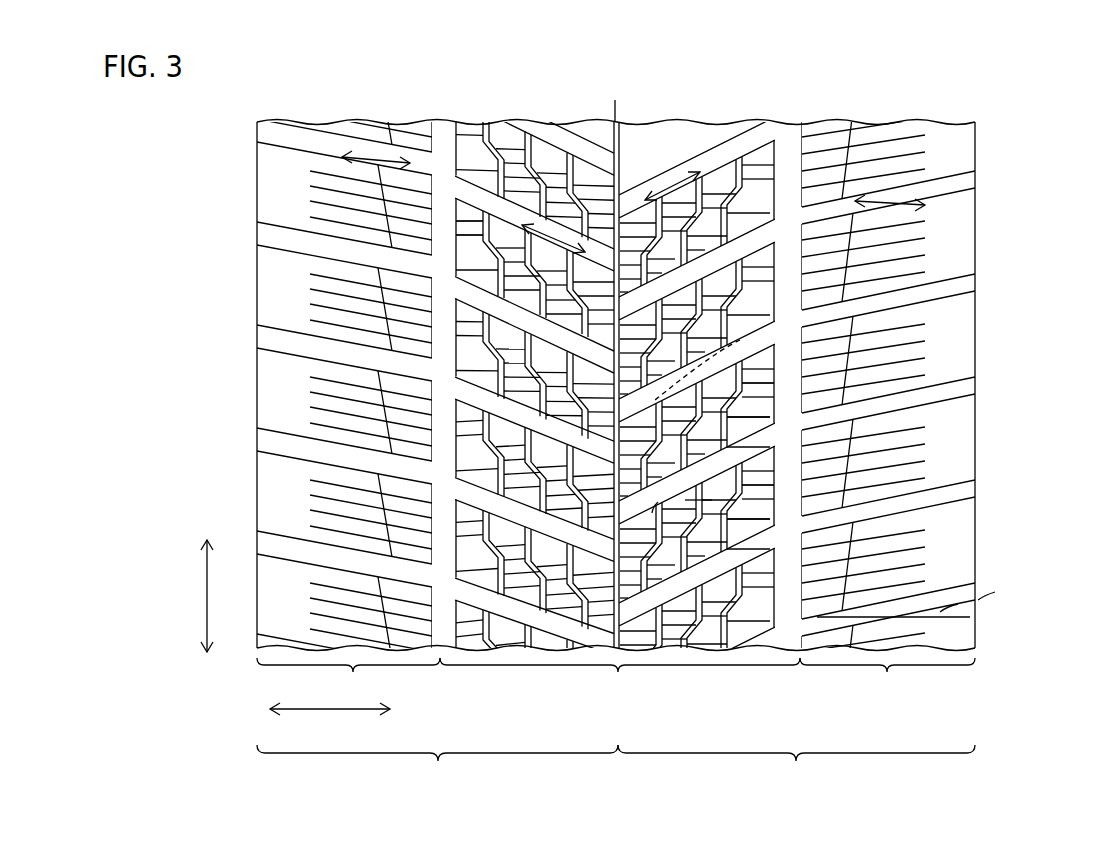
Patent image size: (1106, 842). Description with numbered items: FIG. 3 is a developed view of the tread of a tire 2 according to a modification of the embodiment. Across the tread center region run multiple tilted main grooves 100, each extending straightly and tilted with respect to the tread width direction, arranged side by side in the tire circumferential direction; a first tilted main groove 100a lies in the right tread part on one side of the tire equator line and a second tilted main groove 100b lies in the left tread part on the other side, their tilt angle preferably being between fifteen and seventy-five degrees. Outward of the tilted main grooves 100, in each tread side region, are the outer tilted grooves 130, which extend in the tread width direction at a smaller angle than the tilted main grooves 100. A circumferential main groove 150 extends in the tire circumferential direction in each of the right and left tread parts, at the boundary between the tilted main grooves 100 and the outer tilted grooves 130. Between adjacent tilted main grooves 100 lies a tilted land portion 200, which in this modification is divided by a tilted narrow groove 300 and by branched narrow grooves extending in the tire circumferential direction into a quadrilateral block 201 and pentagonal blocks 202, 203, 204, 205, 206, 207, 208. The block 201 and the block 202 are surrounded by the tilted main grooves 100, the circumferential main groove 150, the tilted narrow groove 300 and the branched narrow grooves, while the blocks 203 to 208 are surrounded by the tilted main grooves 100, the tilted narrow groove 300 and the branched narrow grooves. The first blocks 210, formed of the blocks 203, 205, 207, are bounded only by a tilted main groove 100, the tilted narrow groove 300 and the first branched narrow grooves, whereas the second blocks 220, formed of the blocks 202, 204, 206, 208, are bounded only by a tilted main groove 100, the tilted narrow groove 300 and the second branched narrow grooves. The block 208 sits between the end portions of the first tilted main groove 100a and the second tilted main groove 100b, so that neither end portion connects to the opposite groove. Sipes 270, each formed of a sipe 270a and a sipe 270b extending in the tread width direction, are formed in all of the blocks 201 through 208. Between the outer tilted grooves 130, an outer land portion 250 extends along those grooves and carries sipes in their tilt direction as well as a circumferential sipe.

The pneumatic tire 2 is at (905, 66).
The tilted main groove 100 is at (487, 57).
The first tilted main groove 100a is at (786, 121).
The second tilted main groove 100b is at (543, 124).
The outer tilted groove 130 is at (257, 127).
The circumferential main groove 150 is at (440, 111).
The tilted land portion 200 is at (458, 285).
The block 201 is at (745, 450).
The block 202 is at (745, 490).
The block 203 is at (745, 422).
The block 204 is at (745, 508).
The block 205 is at (745, 405).
The block 206 is at (745, 528).
The block 207 is at (745, 388).
The block 208 is at (745, 548).
The first blocks 210 is at (1053, 333).
The second blocks 220 is at (1053, 452).
The outer land portion 250 is at (257, 186).
The sipe 270 is at (311, 182).
The sipe 270a is at (470, 221).
The sipe 270b is at (462, 235).
The tilted narrow groove 300 is at (740, 340).